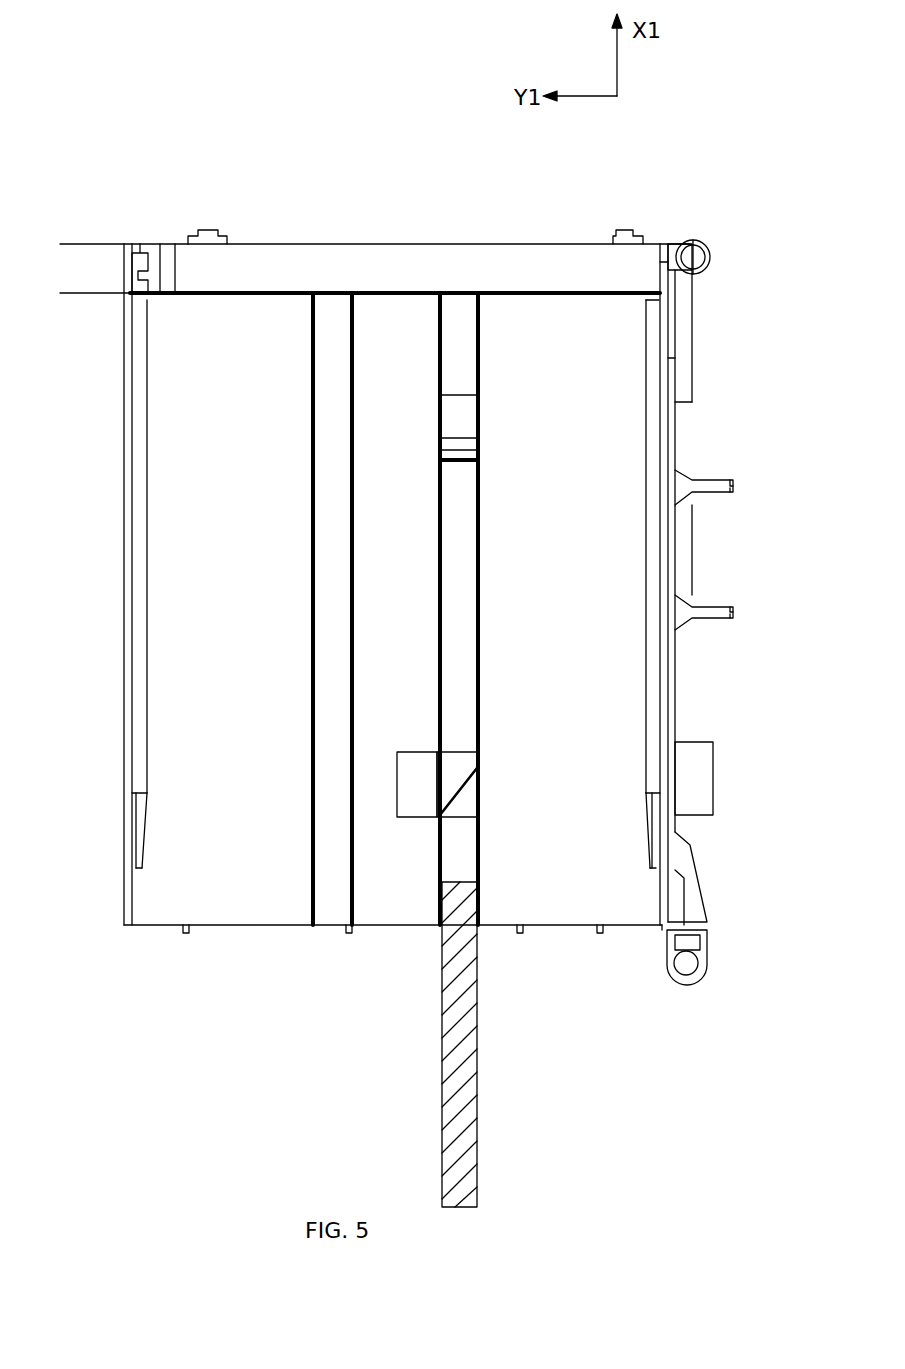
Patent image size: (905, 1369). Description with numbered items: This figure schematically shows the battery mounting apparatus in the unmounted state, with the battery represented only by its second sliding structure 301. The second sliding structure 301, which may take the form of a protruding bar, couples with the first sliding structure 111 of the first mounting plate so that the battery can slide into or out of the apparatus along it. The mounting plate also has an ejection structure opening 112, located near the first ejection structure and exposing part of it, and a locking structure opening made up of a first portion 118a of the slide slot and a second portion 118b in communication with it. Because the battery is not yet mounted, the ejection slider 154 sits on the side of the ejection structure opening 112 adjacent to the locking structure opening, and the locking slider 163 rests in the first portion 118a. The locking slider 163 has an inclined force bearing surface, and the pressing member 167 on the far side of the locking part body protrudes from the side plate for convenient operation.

The first sliding structure 111 is at (456, 556).
The ejection structure opening 112 is at (455, 408).
The ejection slider 154 is at (458, 452).
The locking slider 163 is at (453, 768).
The first portion of the locking structure opening 118a is at (468, 797).
The second portion of the locking structure opening 118b is at (417, 775).
The pressing member 167 is at (700, 785).
The second sliding structure 301 is at (455, 1090).